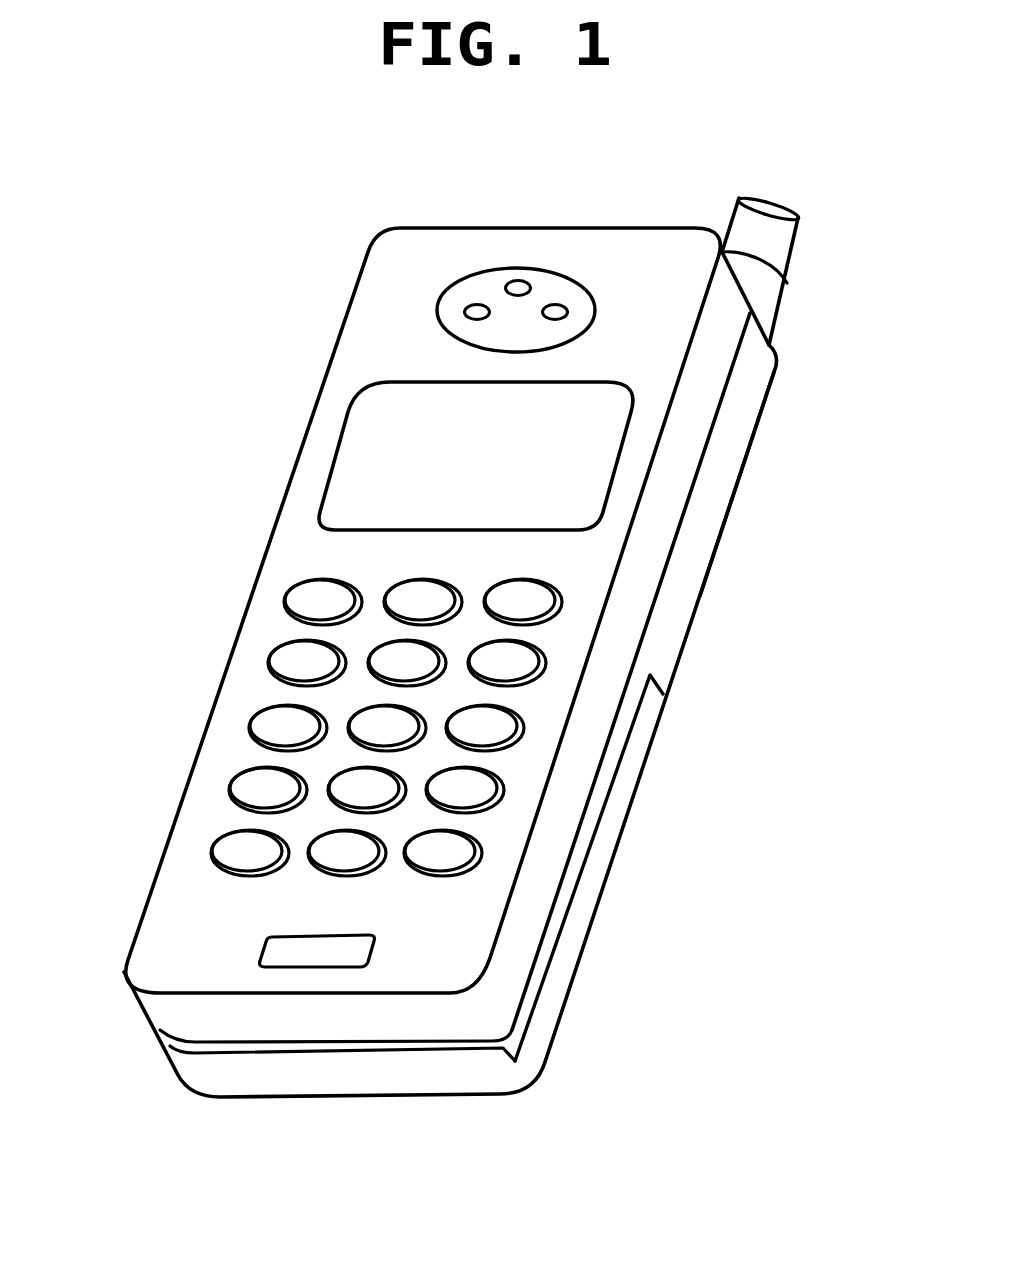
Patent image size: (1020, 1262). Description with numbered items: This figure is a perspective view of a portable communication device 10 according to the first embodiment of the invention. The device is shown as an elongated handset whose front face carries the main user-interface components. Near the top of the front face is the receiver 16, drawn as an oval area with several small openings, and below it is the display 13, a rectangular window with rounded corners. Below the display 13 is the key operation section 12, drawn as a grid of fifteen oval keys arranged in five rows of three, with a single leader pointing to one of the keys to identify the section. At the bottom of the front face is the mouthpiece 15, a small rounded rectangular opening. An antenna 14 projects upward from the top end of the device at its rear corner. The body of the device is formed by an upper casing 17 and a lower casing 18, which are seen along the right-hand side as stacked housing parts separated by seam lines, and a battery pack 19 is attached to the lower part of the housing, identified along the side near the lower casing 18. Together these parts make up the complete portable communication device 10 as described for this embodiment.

The portable communication device 10 is at (290, 562).
The key operation section 12 is at (443, 860).
The display 13 is at (377, 463).
The antenna 14 is at (768, 237).
The mouthpiece 15 is at (293, 945).
The receiver 16 is at (437, 315).
The upper casing 17 is at (670, 480).
The lower casing 18 is at (680, 600).
The battery pack 19 is at (625, 775).